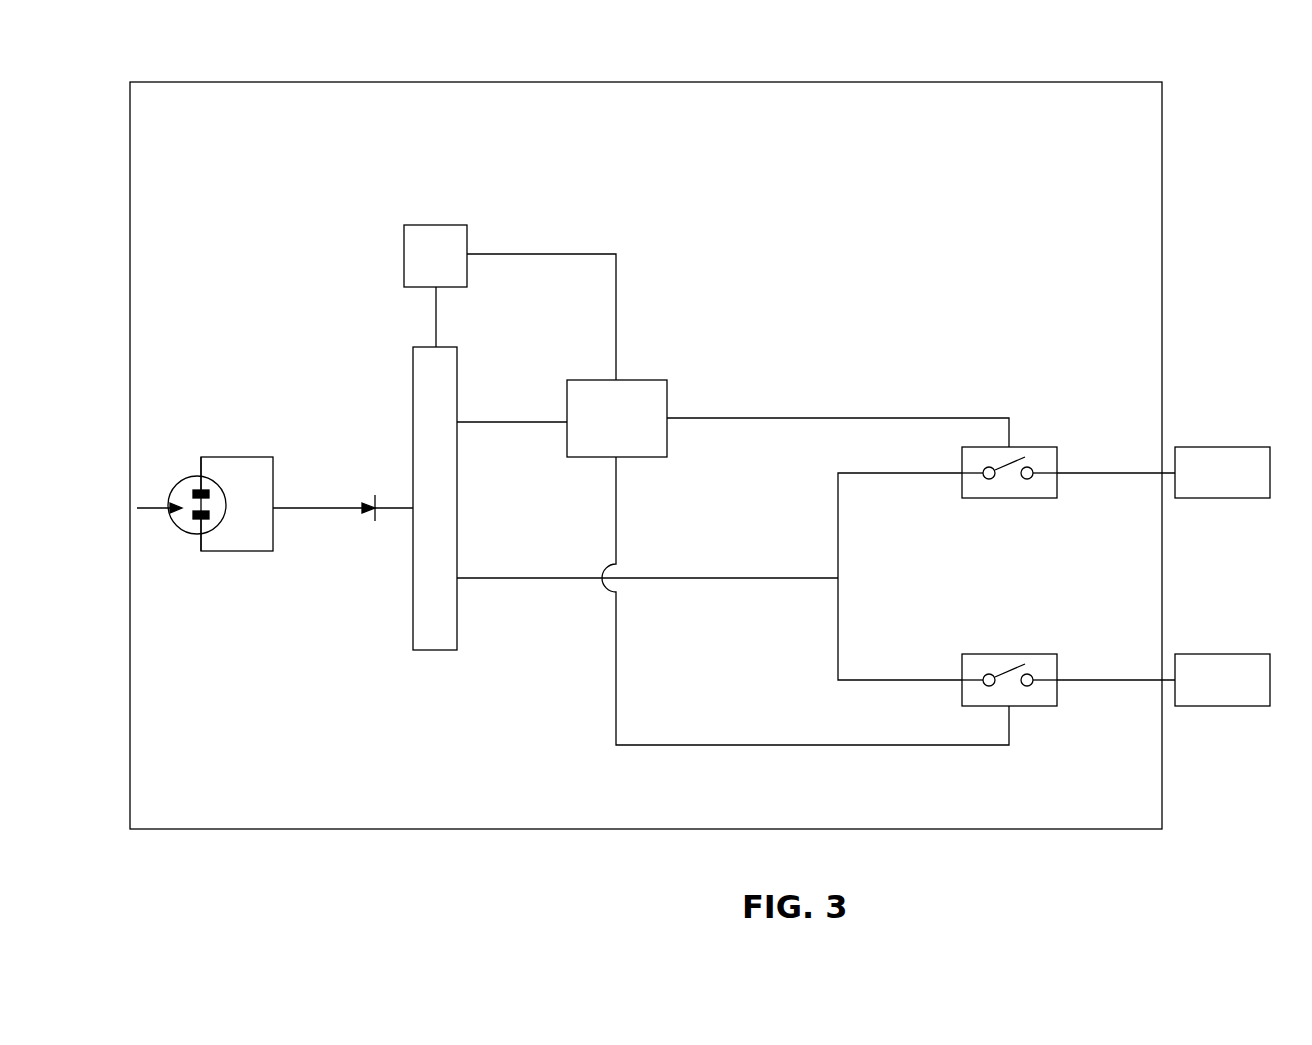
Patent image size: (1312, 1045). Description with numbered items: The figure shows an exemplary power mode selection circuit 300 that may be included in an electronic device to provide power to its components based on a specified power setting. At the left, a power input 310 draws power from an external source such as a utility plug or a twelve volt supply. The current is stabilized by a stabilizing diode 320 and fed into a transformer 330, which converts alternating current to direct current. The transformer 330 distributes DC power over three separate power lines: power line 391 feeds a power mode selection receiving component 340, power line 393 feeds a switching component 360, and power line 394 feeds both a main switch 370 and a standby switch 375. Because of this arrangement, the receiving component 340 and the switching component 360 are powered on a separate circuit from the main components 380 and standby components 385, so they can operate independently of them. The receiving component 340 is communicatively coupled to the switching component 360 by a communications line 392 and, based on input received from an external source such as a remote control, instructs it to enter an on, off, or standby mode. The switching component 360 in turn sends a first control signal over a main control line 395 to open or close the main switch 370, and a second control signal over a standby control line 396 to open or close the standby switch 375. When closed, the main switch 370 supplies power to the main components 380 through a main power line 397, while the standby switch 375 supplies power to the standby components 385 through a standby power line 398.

The power mode selection circuit 300 is at (229, 82).
The power input 310 is at (203, 555).
The stabilizing diode 320 is at (363, 527).
The transformer 330 is at (433, 652).
The power mode selection receiving component 340 is at (422, 224).
The switching component 360 is at (667, 445).
The main switch 370 is at (1030, 447).
The standby switch 375 is at (1011, 653).
The main components 380 is at (1222, 447).
The standby components 385 is at (1222, 653).
The power line 391 is at (434, 318).
The communications line 392 is at (582, 253).
The power line 393 is at (513, 421).
The power line 394 is at (514, 576).
The main control line 395 is at (797, 417).
The standby control line 396 is at (771, 747).
The main power line 397 is at (1110, 472).
The standby power line 398 is at (1107, 679).